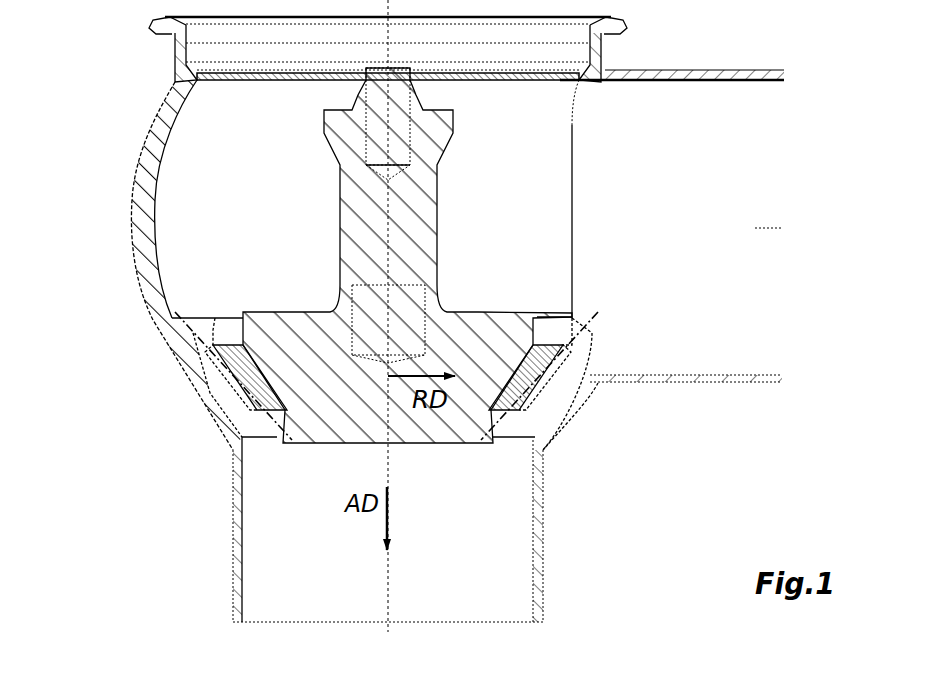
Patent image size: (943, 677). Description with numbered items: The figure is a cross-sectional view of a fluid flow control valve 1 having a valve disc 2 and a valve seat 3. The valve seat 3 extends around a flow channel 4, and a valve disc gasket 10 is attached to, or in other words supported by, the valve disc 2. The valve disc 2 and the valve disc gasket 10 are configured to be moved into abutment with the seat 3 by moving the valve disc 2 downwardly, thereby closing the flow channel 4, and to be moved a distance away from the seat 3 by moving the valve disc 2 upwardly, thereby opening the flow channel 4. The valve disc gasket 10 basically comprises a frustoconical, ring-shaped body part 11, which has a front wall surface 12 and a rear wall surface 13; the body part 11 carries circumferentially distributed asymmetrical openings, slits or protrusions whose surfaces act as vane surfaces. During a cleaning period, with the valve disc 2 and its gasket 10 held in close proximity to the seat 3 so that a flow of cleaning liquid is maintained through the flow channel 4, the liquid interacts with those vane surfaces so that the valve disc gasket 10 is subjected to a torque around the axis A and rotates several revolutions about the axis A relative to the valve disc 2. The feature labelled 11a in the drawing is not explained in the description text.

The fluid flow control valve 1 is at (584, 483).
The valve disc 2 is at (490, 333).
The valve seat 3 is at (211, 385).
The flow channel 4 is at (457, 511).
The valve disc gasket 10 is at (216, 358).
The frustoconical, ring-shaped body part 11 is at (560, 375).
The sealing plane 11a is at (180, 323).
The front wall surface 12 is at (526, 404).
The rear wall surface 13 is at (258, 370).
The axis A is at (391, 601).